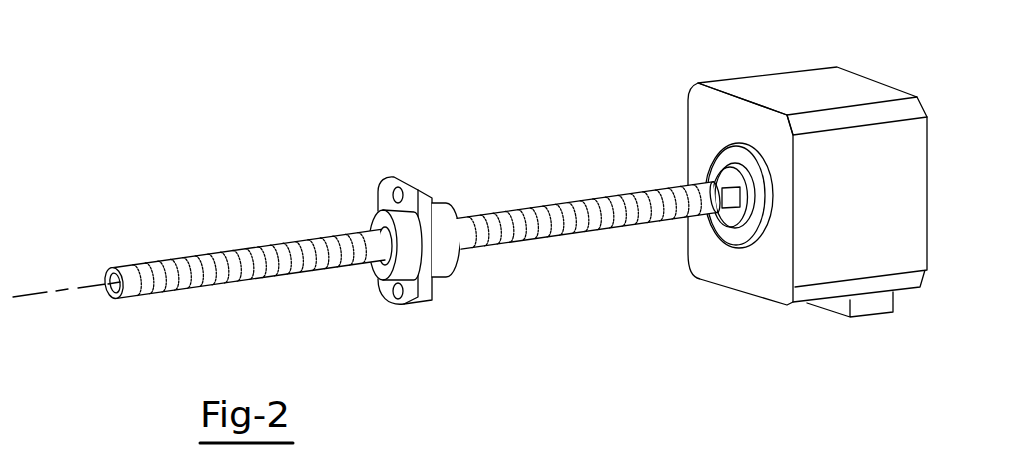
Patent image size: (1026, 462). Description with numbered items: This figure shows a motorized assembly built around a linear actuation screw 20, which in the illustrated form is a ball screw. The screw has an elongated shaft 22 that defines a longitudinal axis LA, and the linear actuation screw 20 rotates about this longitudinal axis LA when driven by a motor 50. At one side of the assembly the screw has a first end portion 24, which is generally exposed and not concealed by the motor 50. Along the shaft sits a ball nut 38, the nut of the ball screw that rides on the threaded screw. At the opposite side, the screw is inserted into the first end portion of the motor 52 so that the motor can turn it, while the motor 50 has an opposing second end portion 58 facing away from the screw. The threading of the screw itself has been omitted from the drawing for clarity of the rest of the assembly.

The linear actuation screw 20 is at (568, 205).
The elongated shaft 22 is at (247, 258).
The first end portion 24 is at (143, 271).
The ball nut 38 is at (380, 198).
The motor 50 is at (777, 165).
The first end portion of the motor 52 is at (700, 112).
The second end portion of the motor 58 is at (877, 82).
The longitudinal axis LA is at (62, 290).